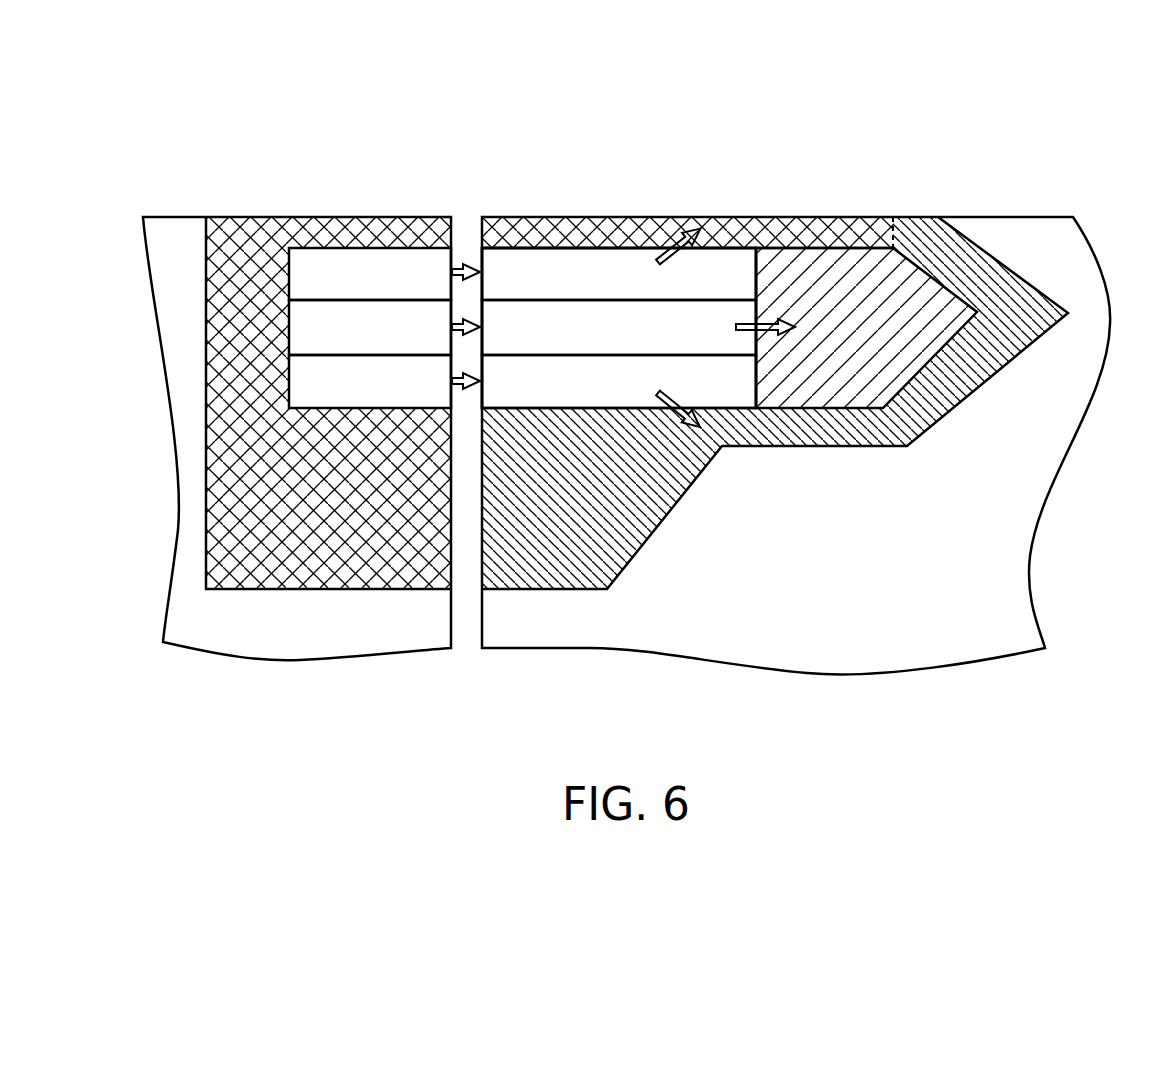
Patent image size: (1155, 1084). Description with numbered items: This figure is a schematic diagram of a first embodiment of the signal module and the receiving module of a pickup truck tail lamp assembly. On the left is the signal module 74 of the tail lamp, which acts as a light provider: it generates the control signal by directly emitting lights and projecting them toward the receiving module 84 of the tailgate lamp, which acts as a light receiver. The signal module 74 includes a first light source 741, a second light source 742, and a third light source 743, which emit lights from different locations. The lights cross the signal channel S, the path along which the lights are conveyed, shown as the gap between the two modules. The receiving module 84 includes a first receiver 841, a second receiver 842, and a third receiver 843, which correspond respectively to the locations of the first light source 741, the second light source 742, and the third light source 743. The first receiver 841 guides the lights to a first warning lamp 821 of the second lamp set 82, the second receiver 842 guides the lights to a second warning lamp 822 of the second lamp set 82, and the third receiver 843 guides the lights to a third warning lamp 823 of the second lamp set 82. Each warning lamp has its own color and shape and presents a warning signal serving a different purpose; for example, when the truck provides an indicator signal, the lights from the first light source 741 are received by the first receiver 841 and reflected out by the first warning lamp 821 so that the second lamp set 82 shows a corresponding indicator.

The signal module 74 is at (377, 228).
The first light source 741 is at (395, 290).
The second light source 742 is at (395, 343).
The third light source 743 is at (395, 398).
The signal channel S is at (465, 254).
The receiving module 84 is at (617, 228).
The first receiver 841 is at (640, 290).
The second receiver 842 is at (640, 343).
The third receiver 843 is at (640, 398).
The second lamp set 82 is at (796, 399).
The first warning lamp 821 is at (782, 235).
The second warning lamp 822 is at (853, 258).
The third warning lamp 823 is at (557, 552).